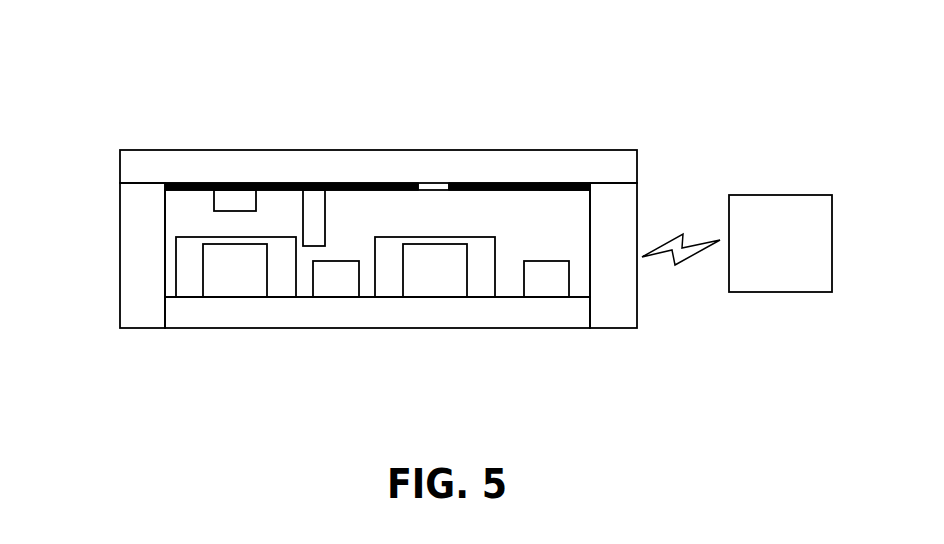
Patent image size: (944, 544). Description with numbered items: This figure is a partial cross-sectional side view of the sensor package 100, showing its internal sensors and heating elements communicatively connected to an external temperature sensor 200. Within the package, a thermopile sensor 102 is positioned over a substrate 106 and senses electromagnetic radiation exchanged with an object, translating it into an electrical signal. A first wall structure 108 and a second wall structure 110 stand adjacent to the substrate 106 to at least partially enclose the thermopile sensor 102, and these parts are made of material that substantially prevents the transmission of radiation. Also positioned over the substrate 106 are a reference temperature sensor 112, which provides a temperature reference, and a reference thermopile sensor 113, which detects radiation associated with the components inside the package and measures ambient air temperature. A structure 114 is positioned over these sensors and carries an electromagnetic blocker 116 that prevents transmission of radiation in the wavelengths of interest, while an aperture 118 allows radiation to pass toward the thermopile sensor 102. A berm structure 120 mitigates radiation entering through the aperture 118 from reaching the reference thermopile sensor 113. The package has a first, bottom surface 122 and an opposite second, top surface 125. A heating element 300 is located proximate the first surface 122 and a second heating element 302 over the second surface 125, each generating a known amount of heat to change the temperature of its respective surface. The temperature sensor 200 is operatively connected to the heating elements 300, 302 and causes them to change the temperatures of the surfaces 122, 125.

The sensor package 100 is at (514, 76).
The thermopile sensor 102 is at (385, 284).
The substrate 106 is at (428, 315).
The first wall structure 108 is at (135, 290).
The second wall structure 110 is at (620, 312).
The reference temperature sensor 112 is at (318, 286).
The reference thermopile sensor 113 is at (270, 284).
The structure 114 is at (128, 167).
The electromagnetic blocker 116 is at (302, 183).
The aperture 118 is at (434, 185).
The berm structure 120 is at (325, 225).
The first surface 122 is at (502, 295).
The second surface 125 is at (555, 183).
The temperature sensor 200 is at (797, 190).
The heating element 300 is at (233, 185).
The second heating element 302 is at (527, 287).